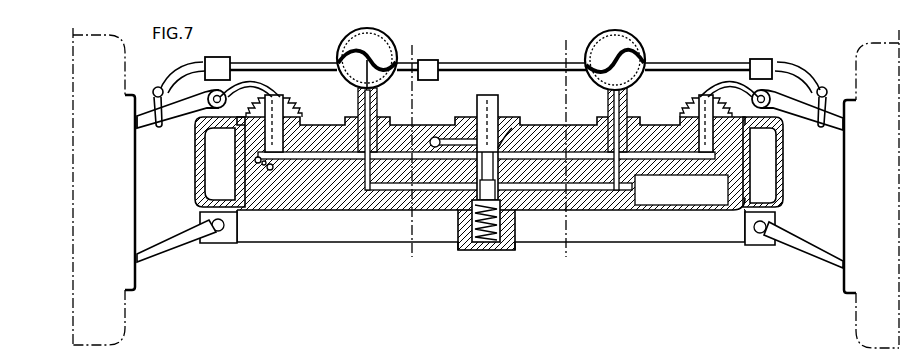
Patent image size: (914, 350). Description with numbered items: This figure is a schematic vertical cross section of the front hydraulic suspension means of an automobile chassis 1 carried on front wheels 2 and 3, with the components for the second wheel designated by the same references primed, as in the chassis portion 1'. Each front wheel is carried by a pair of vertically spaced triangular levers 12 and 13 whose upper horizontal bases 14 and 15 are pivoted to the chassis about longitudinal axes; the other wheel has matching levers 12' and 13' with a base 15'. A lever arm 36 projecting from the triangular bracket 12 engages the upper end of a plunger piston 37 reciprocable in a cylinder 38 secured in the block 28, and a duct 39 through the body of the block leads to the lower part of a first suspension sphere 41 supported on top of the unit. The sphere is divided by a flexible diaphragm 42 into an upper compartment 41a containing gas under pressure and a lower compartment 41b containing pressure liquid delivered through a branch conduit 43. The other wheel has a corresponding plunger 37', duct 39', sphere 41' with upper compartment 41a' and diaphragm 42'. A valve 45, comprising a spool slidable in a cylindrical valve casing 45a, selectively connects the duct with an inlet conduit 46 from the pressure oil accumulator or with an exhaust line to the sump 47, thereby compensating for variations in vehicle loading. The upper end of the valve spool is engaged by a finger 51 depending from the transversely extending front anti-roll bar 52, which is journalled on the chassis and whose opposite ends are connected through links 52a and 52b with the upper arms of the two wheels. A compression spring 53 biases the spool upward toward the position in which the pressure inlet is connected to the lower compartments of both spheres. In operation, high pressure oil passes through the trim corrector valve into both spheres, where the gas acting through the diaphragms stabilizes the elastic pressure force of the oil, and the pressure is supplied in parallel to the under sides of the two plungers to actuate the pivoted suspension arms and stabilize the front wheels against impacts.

The automobile chassis 1 is at (457, 163).
The chassis (primed) 1' is at (772, 162).
The front wheel 2 is at (862, 327).
The front wheel 3 is at (119, 310).
The triangular arm or lever 12 is at (181, 116).
The triangular arm or lever (primed) 12' is at (797, 121).
The triangular arm or lever 13 is at (176, 250).
The triangular arm or lever (primed) 13' is at (803, 242).
The upper horizontal side or base 14 is at (204, 80).
The upper horizontal side or base 15 is at (218, 246).
The upper horizontal side or base (primed) 15' is at (760, 246).
The block 28 is at (320, 206).
The lever arm 36 is at (245, 75).
The plunger piston 37 is at (278, 115).
The plunger piston (primed) 37' is at (701, 115).
The cylinder 38 is at (273, 170).
The duct 39 is at (486, 130).
The duct (primed) 39' is at (547, 190).
The first suspension sphere 41 is at (367, 49).
The suspension sphere (primed) 41' is at (624, 52).
The upper compartment 41a is at (351, 56).
The upper compartment (primed) 41a' is at (639, 60).
The lower compartment 41b is at (358, 73).
The flexible diaphragm 42 is at (374, 43).
The flexible diaphragm (primed) 42' is at (609, 42).
The branch conduit 43 is at (378, 95).
The valve 45 is at (499, 97).
The cylindrical valve casing 45a is at (506, 130).
The inlet conduit 46 is at (437, 136).
The sump 47 is at (666, 203).
The finger 51 is at (480, 93).
The front anti-roll bar 52 is at (504, 68).
The link 52a is at (152, 92).
The link 52b is at (830, 94).
The compression spring 53 is at (495, 250).